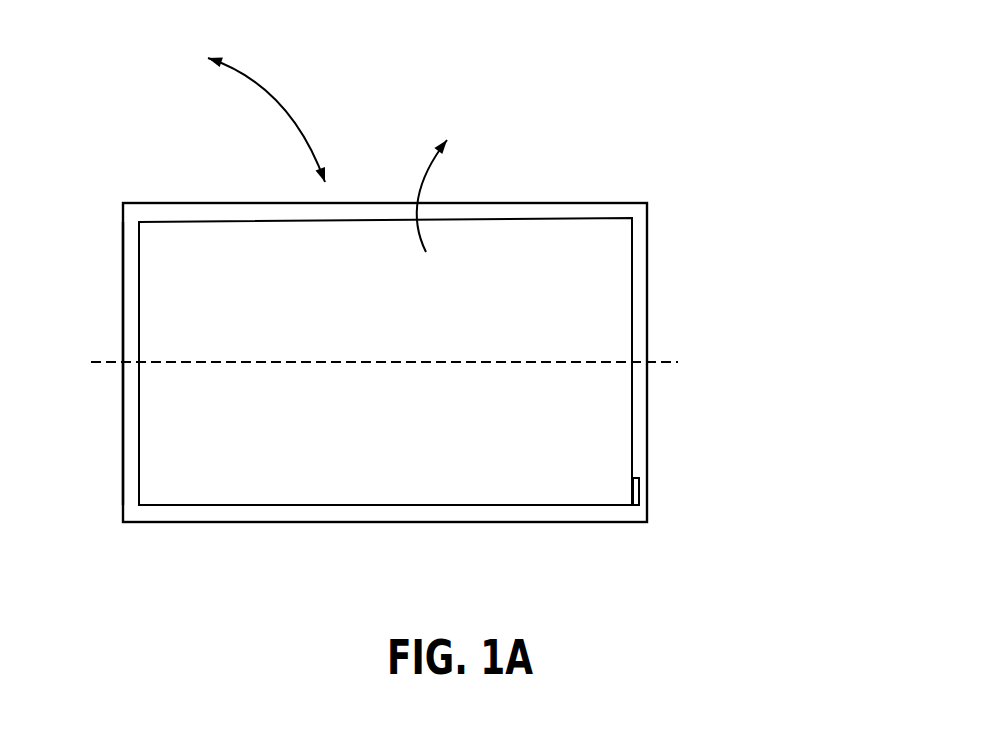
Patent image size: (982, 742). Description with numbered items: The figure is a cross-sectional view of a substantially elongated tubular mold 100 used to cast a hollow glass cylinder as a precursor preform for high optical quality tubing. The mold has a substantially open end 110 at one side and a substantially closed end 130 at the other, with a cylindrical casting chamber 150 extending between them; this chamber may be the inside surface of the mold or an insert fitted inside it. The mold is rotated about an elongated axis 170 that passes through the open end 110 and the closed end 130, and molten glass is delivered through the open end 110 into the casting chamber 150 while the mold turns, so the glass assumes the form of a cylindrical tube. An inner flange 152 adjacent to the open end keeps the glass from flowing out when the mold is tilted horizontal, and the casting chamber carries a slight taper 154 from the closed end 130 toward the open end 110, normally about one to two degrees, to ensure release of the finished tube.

The substantially elongated tubular mold 100 is at (775, 125).
The substantially open end 110 is at (648, 318).
The substantially closed end 130 is at (128, 327).
The cylindrical casting chamber 150 is at (617, 218).
The inner flange 152 is at (641, 492).
The taper 154 is at (310, 504).
The elongated axis 170 is at (408, 363).